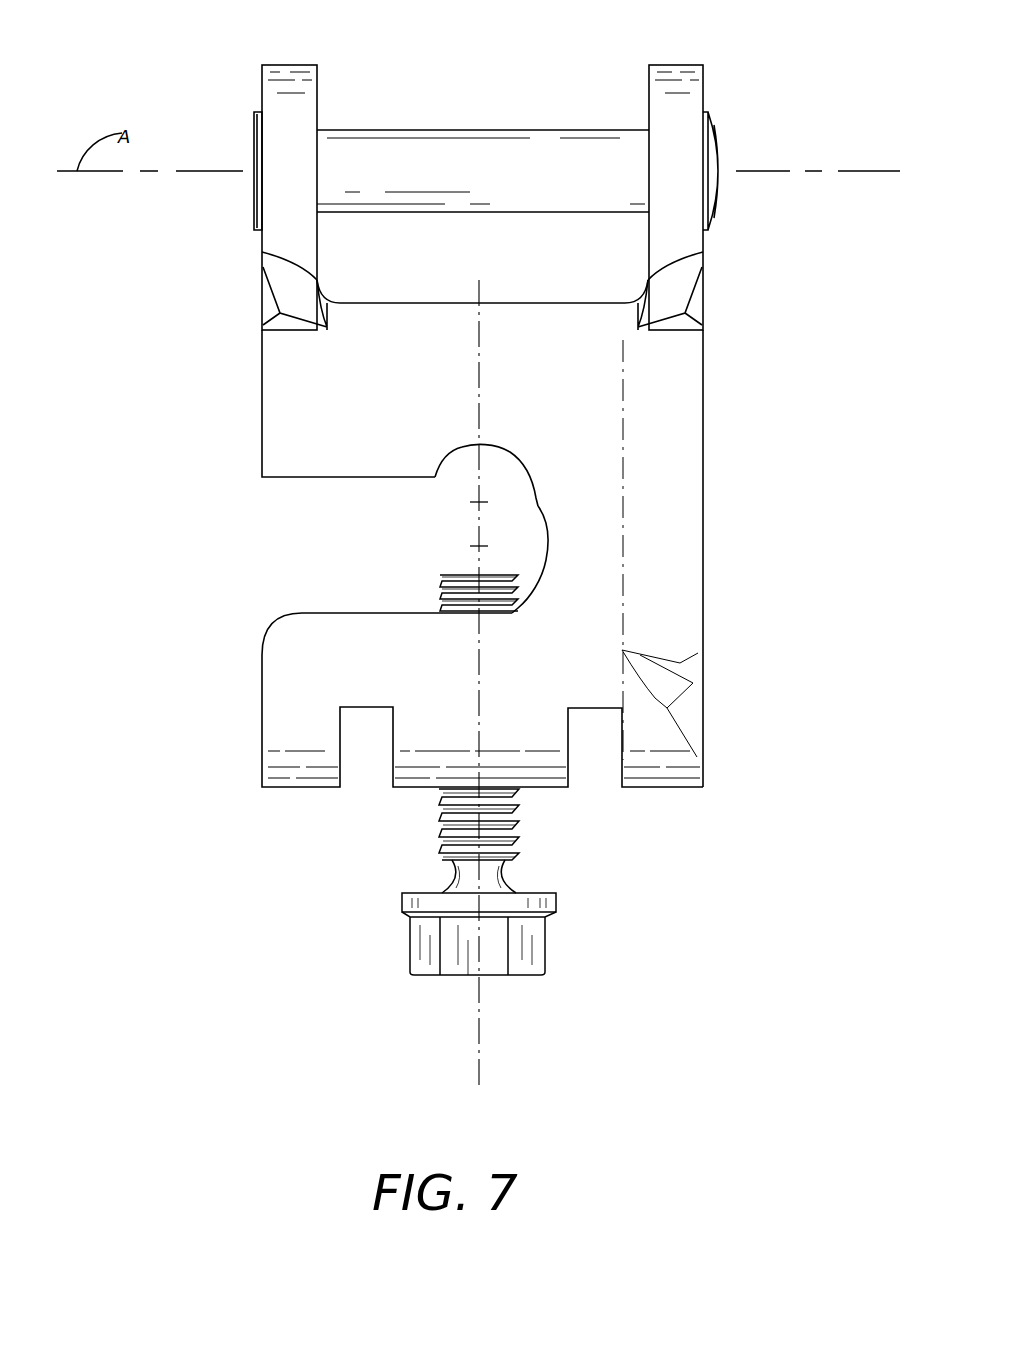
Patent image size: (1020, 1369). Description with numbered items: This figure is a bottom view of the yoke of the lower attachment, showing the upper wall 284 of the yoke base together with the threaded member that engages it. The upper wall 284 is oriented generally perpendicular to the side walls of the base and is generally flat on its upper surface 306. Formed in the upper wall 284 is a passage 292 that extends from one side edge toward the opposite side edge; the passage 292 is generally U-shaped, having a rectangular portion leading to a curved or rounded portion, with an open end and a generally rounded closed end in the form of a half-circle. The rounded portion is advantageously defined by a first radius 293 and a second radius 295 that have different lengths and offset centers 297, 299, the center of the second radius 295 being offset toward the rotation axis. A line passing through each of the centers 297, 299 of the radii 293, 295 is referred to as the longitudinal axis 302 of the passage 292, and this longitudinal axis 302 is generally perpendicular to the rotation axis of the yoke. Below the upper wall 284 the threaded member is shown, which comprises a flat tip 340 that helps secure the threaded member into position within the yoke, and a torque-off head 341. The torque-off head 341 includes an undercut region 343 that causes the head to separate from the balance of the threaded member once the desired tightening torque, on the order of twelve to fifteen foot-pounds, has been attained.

The upper wall 284 is at (668, 420).
The passage 292 is at (352, 607).
The first radius 293 is at (533, 591).
The second radius 295 is at (522, 464).
The center 297 is at (478, 547).
The center 299 is at (478, 502).
The longitudinal axis 302 is at (478, 378).
The upper surface 306 is at (572, 372).
The flat tip 340 is at (490, 573).
The torque-off head 341 is at (420, 950).
The undercut region 343 is at (505, 885).